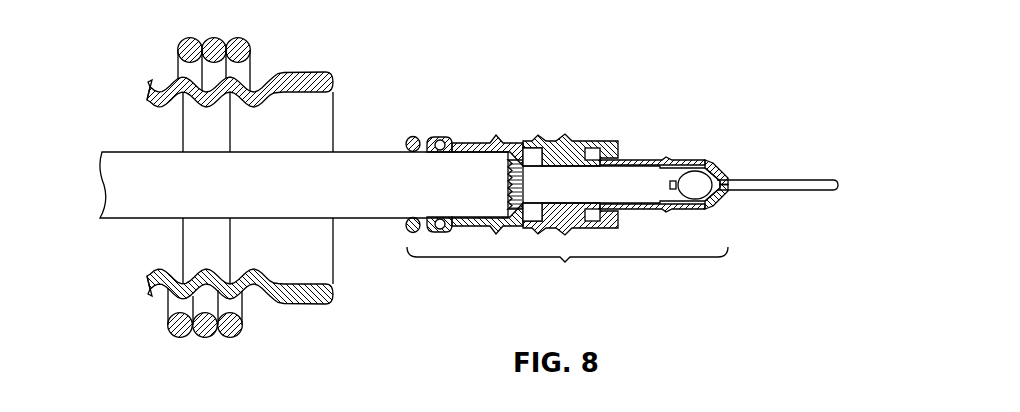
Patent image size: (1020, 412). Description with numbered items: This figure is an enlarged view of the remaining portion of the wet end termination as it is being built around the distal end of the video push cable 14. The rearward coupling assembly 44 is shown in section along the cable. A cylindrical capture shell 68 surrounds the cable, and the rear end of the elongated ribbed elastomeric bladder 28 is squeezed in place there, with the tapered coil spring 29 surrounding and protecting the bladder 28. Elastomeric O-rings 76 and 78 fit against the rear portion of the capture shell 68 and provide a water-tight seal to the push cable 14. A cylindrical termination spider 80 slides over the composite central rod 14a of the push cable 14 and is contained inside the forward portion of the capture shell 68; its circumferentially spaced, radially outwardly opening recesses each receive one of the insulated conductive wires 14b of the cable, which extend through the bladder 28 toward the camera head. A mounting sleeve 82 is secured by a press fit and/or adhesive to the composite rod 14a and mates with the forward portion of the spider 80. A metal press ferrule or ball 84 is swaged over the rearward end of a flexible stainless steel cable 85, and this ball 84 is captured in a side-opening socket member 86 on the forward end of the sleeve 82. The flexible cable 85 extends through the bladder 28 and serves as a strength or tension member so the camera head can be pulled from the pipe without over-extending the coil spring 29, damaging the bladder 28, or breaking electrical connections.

The push cable 14 is at (112, 152).
The composite central rod 14a is at (642, 172).
The insulated conductive wires 14b is at (507, 168).
The elastomeric bladder 28 is at (290, 300).
The coil spring 29 is at (232, 334).
The rearward coupling assembly 44 is at (567, 272).
The capture shell 68 is at (472, 220).
The elastomeric O-ring 76 is at (407, 139).
The elastomeric O-ring 78 is at (440, 139).
The termination spider 80 is at (577, 141).
The mounting sleeve 82 is at (646, 210).
The ball 84 is at (693, 176).
The flexible stainless steel cable 85 is at (797, 180).
The side-opening socket member 86 is at (718, 169).